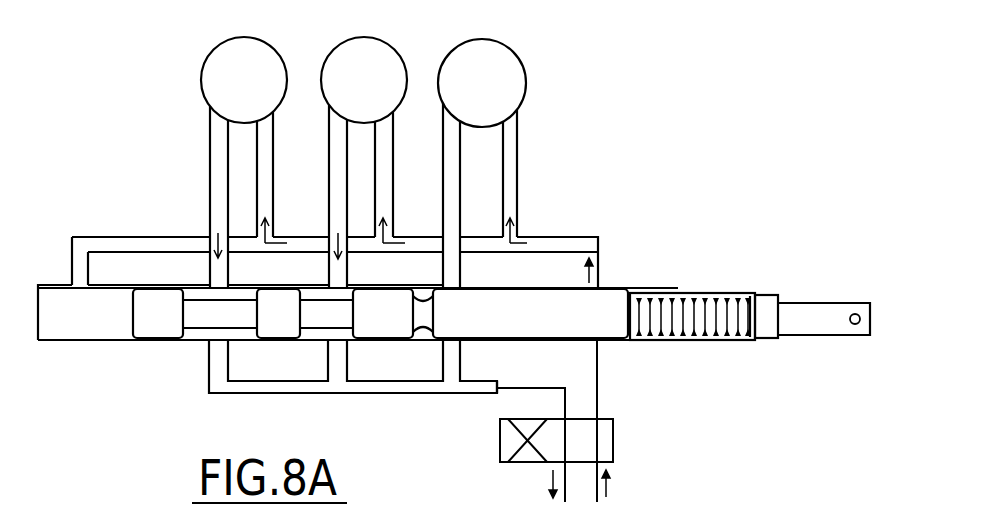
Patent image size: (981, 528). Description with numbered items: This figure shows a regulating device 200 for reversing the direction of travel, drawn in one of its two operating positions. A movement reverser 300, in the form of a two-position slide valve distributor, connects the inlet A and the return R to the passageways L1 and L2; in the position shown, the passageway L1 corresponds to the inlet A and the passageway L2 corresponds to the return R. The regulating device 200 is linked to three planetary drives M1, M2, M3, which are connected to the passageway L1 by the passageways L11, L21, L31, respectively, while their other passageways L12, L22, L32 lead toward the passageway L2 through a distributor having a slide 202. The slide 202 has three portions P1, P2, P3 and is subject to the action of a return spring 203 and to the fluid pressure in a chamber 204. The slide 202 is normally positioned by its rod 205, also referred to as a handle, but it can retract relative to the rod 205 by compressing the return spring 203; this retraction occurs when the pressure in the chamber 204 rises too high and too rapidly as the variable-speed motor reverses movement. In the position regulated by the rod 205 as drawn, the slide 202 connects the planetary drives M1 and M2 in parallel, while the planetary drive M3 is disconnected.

The regulating device 200 is at (545, 200).
The slide 202 is at (158, 321).
The return spring 203 is at (718, 340).
The chamber 204 is at (75, 322).
The rod 205 is at (833, 323).
The movement reverser 300 is at (613, 433).
The portion of slide P1 is at (200, 320).
The portion of slide P2 is at (333, 317).
The portion of slide P3 is at (423, 320).
The planetary drive M1 is at (244, 80).
The planetary drive M2 is at (364, 80).
The planetary drive M3 is at (482, 83).
The passageway L11 is at (262, 188).
The passageway L12 is at (212, 158).
The passageway L21 is at (381, 198).
The passageway L22 is at (334, 152).
The passageway L31 is at (515, 192).
The passageway L32 is at (450, 158).
The passageway L1 is at (588, 217).
The passageway L2 is at (531, 375).